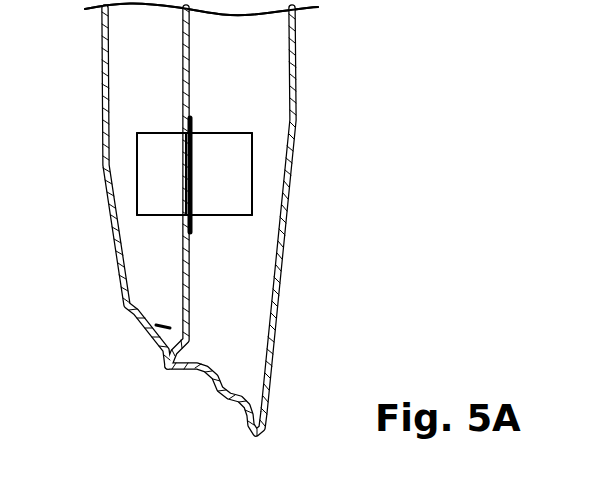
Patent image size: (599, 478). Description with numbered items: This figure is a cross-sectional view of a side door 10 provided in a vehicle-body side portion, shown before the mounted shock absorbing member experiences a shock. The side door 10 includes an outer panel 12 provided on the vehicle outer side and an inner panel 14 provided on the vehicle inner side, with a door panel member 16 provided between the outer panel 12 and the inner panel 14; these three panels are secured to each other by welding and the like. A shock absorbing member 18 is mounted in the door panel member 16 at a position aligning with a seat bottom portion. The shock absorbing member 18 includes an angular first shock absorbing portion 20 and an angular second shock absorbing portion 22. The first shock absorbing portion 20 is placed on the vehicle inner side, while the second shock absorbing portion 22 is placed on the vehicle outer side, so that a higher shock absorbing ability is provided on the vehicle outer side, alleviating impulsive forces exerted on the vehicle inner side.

The side door 10 is at (372, 68).
The outer panel 12 is at (285, 293).
The inner panel 14 is at (113, 256).
The door panel member 16 is at (190, 307).
The shock absorbing member 18 is at (214, 125).
The first shock absorbing portion 20 is at (153, 208).
The second shock absorbing portion 22 is at (230, 208).